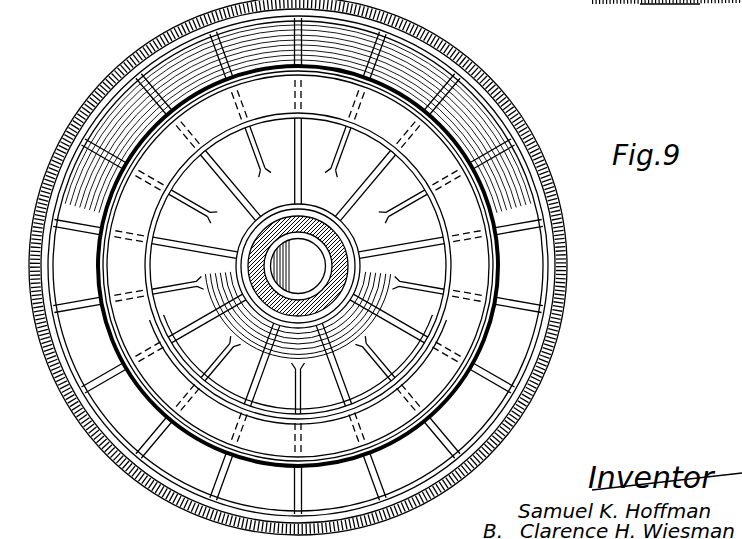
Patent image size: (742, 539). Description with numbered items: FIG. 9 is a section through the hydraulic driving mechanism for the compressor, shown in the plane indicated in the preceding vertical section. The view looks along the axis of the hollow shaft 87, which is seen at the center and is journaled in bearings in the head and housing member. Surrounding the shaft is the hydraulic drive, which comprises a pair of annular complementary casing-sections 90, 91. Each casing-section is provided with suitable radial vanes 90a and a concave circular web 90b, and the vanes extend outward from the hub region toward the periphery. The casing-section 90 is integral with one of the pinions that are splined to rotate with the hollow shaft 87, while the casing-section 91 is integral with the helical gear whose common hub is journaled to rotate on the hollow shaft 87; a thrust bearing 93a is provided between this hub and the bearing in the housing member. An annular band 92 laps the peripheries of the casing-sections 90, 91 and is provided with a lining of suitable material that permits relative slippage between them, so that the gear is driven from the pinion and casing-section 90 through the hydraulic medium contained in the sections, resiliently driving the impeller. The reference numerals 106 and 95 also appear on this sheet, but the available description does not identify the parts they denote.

The hollow shaft 87 is at (315, 257).
The thrust bearing 93a is at (316, 216).
The casing-section 90 is at (532, 143).
The radial vanes 90a is at (470, 94).
The concave circular web 90b is at (441, 64).
The casing-section 91 is at (530, 283).
The annular band 92 is at (540, 171).
The casing wall 106 is at (610, 2).
The housing 95 is at (646, 2).